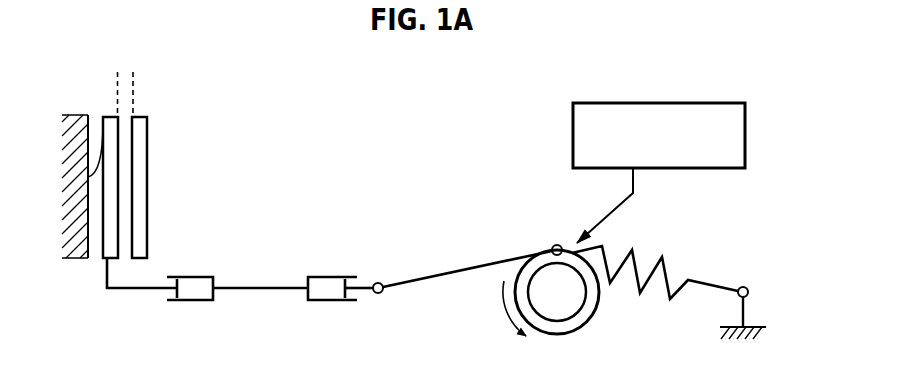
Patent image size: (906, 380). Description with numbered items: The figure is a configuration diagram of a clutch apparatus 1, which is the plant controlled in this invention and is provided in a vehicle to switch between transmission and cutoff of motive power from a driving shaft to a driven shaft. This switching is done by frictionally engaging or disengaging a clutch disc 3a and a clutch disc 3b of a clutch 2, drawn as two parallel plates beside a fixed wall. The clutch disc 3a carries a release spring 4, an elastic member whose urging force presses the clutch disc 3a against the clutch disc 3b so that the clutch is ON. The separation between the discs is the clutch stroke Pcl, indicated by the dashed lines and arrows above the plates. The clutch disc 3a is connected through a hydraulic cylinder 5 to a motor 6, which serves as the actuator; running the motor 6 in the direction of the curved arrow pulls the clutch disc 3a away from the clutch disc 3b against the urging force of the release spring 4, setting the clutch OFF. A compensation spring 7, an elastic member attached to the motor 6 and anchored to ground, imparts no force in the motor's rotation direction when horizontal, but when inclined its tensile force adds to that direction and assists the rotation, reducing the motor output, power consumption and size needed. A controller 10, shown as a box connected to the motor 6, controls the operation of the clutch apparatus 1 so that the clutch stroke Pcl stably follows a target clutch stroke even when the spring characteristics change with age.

The clutch apparatus 1 is at (387, 119).
The clutch 2 is at (160, 192).
The clutch disc 3a is at (128, 258).
The clutch disc 3b is at (149, 220).
The release spring 4 is at (92, 197).
The hydraulic cylinder 5 is at (257, 287).
The motor 6 is at (598, 312).
The compensation spring 7 is at (637, 258).
The controller 10 is at (643, 103).
The clutch stroke Pcl is at (93, 85).